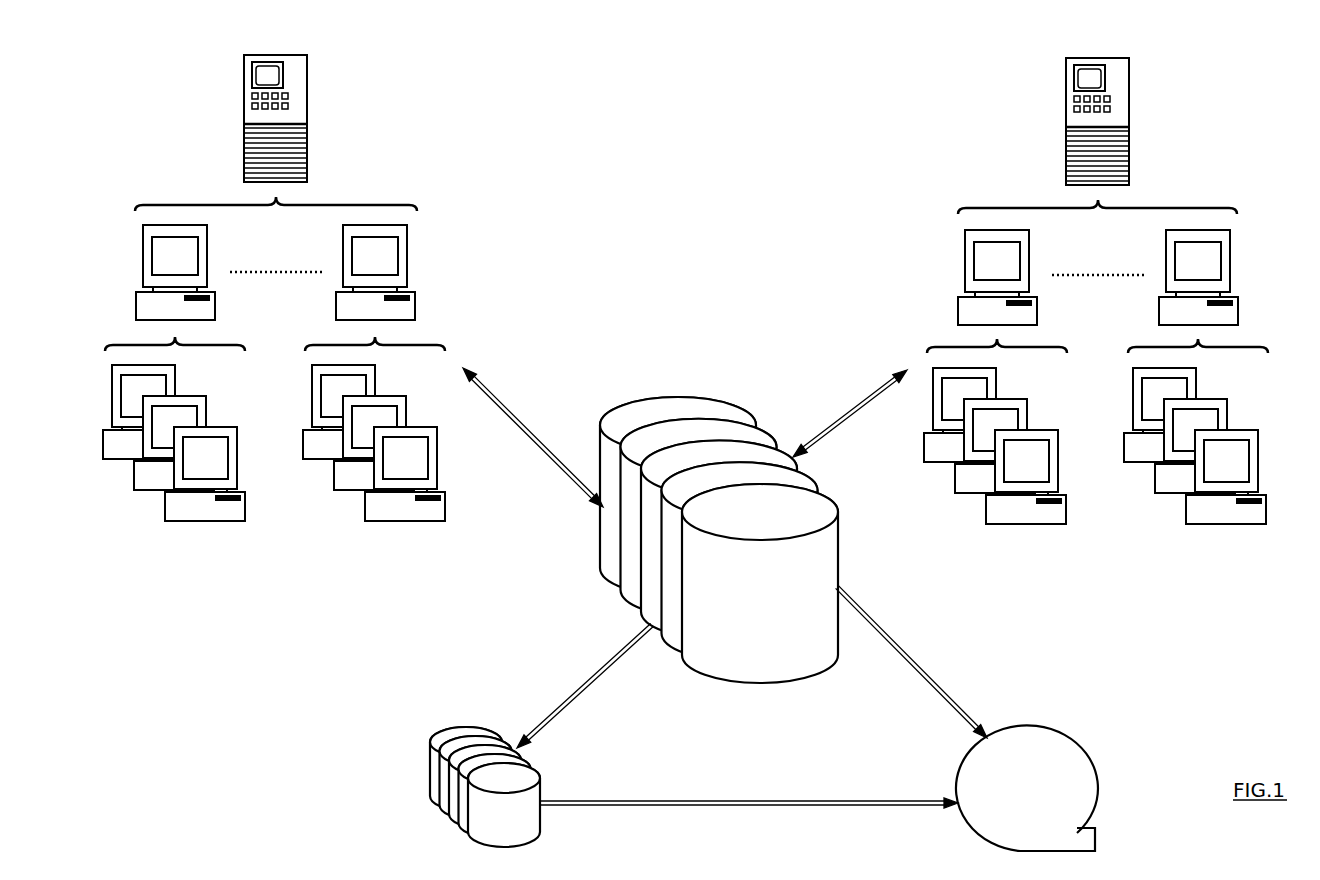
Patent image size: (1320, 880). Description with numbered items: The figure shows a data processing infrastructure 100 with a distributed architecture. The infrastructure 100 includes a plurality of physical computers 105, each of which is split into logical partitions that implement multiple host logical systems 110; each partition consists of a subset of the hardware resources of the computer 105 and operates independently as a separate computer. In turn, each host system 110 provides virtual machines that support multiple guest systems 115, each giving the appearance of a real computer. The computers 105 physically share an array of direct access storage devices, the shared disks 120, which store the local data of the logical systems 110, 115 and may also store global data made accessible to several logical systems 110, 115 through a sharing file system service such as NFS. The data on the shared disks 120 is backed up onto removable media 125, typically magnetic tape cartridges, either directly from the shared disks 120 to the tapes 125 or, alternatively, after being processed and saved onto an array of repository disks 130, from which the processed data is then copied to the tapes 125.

The data processing infrastructure 100 is at (223, 742).
The physical computer 105 is at (307, 105).
The logical system 110 is at (407, 253).
The guest system 115 is at (205, 522).
The shared disks 120 is at (680, 402).
The removable media 125 is at (1027, 725).
The repository disks 130 is at (480, 727).